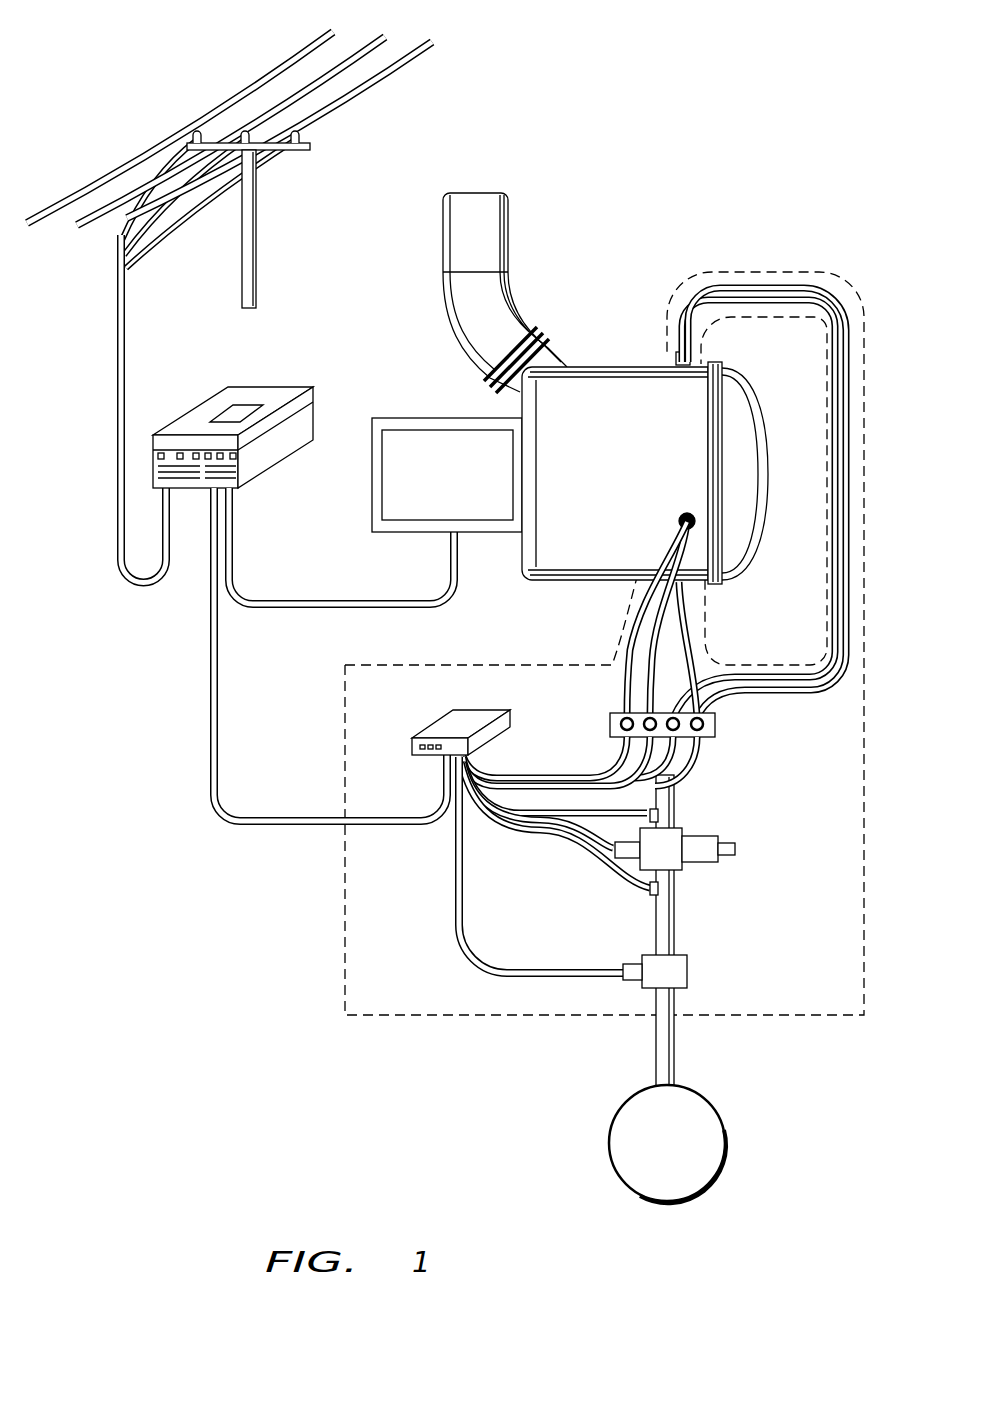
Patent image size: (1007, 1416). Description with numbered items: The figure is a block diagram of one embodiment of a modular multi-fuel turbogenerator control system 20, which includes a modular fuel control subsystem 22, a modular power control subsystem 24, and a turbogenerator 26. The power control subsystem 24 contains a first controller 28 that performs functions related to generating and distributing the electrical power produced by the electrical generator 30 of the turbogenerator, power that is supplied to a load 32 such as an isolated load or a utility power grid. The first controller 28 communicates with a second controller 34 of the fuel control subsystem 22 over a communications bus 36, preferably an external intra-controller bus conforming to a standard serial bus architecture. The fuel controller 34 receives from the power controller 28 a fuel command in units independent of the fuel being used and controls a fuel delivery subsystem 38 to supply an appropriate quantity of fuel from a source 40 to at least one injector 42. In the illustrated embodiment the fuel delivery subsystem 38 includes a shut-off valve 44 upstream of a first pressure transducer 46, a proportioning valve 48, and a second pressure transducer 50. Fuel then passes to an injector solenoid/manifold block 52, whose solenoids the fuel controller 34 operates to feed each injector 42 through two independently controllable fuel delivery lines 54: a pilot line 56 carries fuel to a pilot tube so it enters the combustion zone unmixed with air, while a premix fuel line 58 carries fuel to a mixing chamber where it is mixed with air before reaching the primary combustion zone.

The system 20 is at (652, 176).
The modular fuel control subsystem 22 is at (418, 1022).
The modular power control subsystem 24 is at (271, 388).
The turbogenerator 26 is at (592, 351).
The first controller 28 is at (315, 400).
The electrical generator 30 is at (372, 486).
The load 32 is at (155, 271).
The second controller 34 is at (465, 710).
The communications bus 36 is at (241, 820).
The fuel delivery subsystem 38 is at (745, 851).
The source 40 is at (722, 1121).
The injector 42 is at (675, 353).
The shut-off valve 44 is at (690, 972).
The first pressure transducer 46 is at (645, 893).
The proportioning valve 48 is at (697, 866).
The second pressure transducer 50 is at (587, 838).
The injector solenoid/manifold block 52 is at (717, 723).
The fuel delivery lines 54 is at (858, 578).
The pilot line 56 is at (623, 683).
The premix fuel line 58 is at (665, 603).